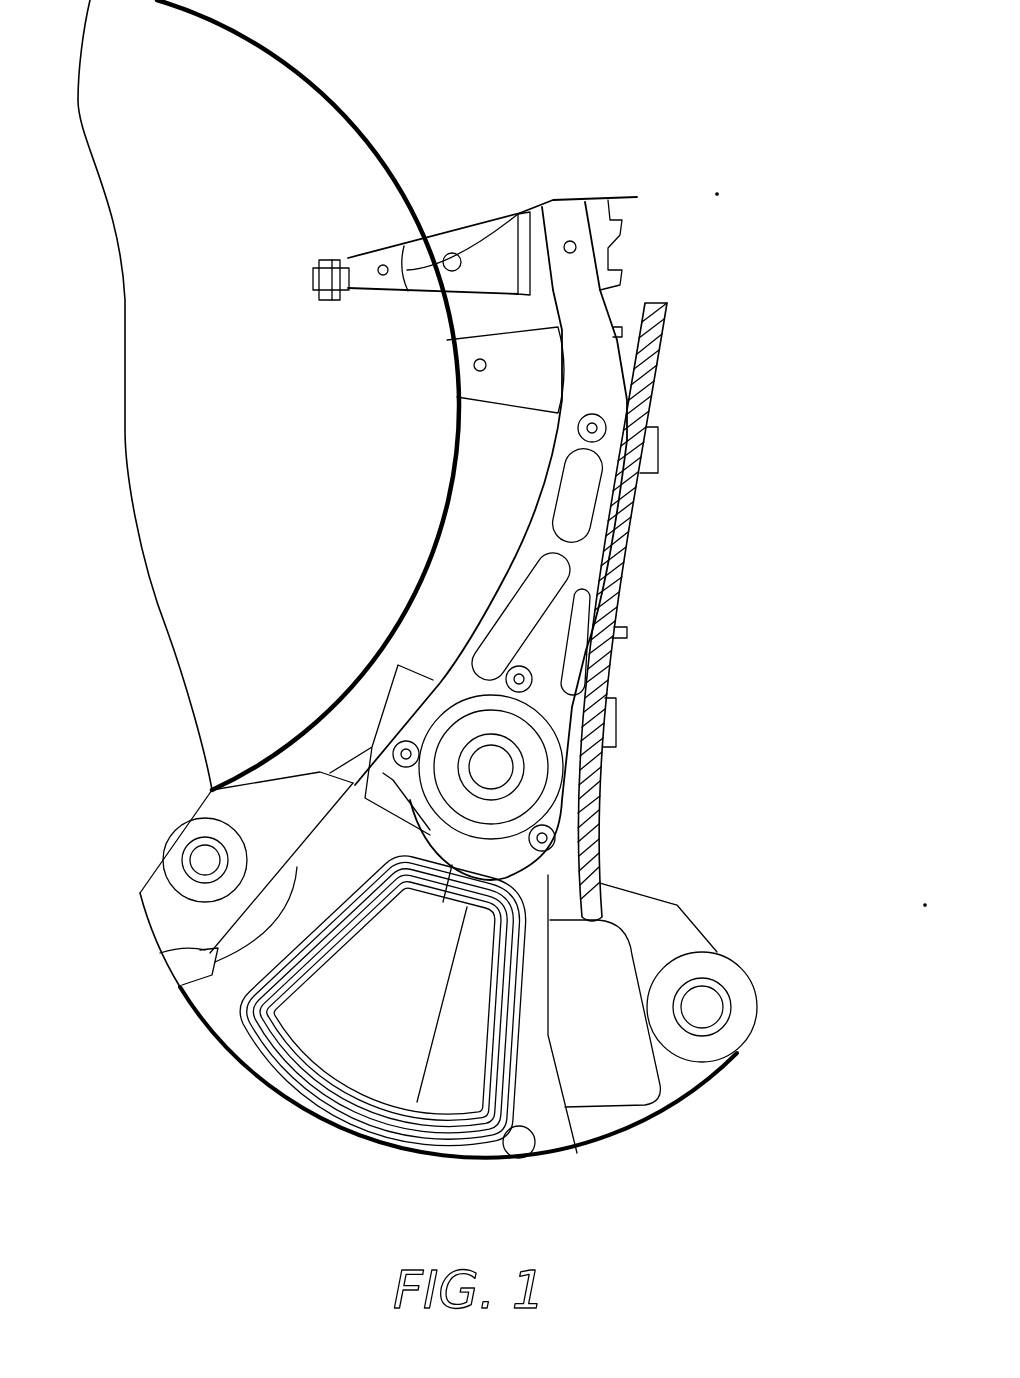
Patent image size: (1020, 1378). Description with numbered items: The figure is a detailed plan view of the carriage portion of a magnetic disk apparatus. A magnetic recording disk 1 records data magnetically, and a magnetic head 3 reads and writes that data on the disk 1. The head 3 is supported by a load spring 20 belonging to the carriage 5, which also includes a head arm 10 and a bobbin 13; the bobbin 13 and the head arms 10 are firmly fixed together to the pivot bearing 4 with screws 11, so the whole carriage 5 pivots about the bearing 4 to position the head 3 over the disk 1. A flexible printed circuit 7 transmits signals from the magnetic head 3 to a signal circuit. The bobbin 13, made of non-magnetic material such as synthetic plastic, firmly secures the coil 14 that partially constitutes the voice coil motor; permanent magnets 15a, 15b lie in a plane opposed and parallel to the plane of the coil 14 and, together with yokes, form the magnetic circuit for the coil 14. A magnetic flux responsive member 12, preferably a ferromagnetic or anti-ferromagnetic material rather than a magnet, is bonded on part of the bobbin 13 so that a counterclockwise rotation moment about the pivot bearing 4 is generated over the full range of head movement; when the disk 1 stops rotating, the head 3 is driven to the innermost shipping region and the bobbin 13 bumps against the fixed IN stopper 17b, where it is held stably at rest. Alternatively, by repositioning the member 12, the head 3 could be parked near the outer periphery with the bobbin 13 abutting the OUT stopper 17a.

The magnetic recording disk 1 is at (353, 128).
The magnetic head 3 is at (318, 290).
The pivot bearing 4 is at (501, 770).
The carriage 5 is at (587, 563).
The flexible printed circuit 7 is at (640, 497).
The head arm 10 is at (597, 312).
The screws 11 is at (556, 840).
The magnetic flux responsive member 12 is at (517, 1148).
The bobbin 13 is at (550, 1132).
The coil 14 is at (335, 1117).
The permanent magnet 15a is at (203, 950).
The permanent magnet 15b is at (645, 1088).
The OUT stopper 17a is at (200, 850).
The IN stopper 17b is at (713, 1011).
The load spring 20 is at (467, 223).